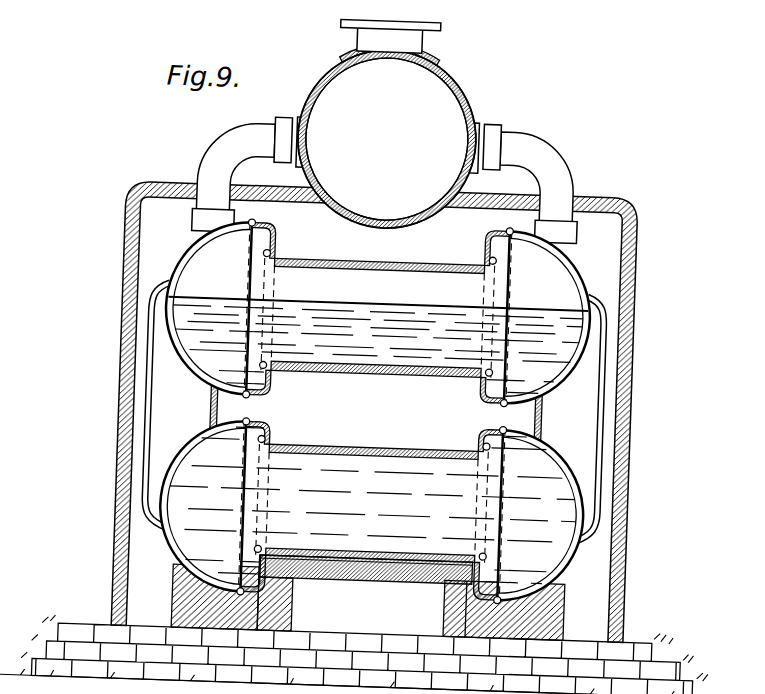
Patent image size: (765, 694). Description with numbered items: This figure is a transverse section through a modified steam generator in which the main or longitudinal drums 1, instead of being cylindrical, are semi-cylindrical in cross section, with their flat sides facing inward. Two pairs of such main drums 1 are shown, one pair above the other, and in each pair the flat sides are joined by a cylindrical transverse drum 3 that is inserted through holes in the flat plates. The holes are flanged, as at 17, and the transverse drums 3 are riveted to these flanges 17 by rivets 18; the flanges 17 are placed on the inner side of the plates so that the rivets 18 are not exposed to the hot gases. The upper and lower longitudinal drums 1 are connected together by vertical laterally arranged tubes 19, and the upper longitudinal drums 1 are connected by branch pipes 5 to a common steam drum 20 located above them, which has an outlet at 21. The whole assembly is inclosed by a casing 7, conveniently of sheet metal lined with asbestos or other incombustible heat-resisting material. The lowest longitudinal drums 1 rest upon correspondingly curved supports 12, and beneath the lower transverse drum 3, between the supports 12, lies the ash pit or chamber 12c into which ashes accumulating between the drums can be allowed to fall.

The main drum 1 is at (374, 411).
The transverse drum 3 is at (375, 410).
The branch pipe 5 is at (388, 179).
The casing 7 is at (119, 392).
The curved support 12 is at (179, 600).
The ash pit 12c is at (364, 595).
The flange 17 is at (260, 258).
The rivet 18 is at (250, 228).
The vertical laterally arranged tube 19 is at (156, 406).
The steam drum 20 is at (388, 136).
The outlet 21 is at (398, 43).